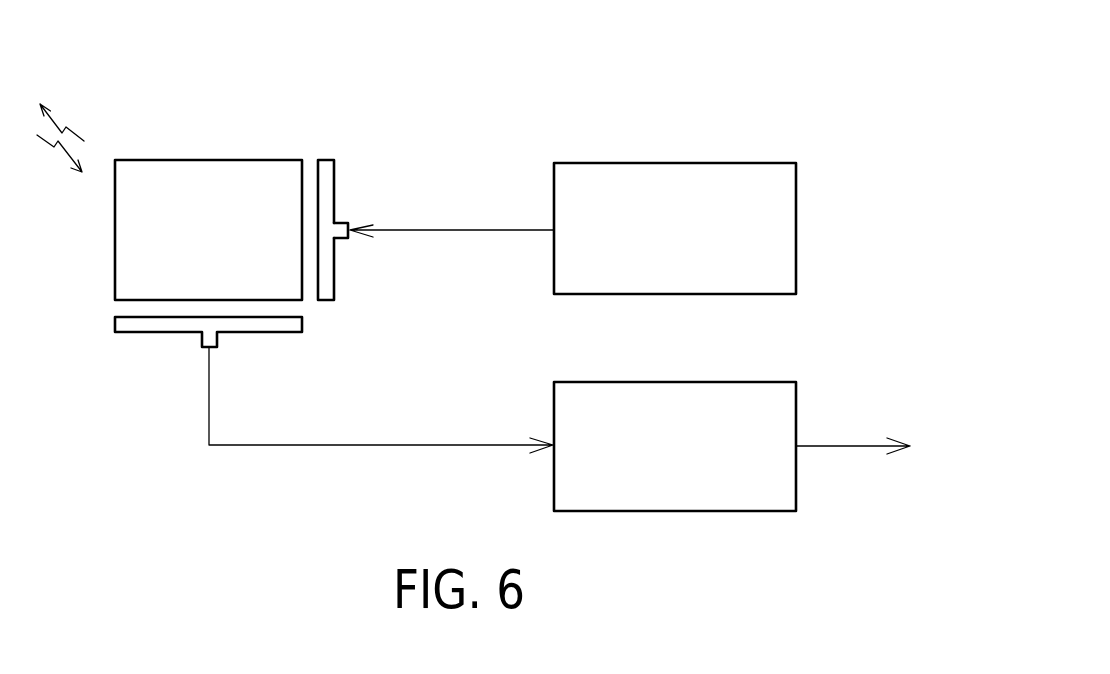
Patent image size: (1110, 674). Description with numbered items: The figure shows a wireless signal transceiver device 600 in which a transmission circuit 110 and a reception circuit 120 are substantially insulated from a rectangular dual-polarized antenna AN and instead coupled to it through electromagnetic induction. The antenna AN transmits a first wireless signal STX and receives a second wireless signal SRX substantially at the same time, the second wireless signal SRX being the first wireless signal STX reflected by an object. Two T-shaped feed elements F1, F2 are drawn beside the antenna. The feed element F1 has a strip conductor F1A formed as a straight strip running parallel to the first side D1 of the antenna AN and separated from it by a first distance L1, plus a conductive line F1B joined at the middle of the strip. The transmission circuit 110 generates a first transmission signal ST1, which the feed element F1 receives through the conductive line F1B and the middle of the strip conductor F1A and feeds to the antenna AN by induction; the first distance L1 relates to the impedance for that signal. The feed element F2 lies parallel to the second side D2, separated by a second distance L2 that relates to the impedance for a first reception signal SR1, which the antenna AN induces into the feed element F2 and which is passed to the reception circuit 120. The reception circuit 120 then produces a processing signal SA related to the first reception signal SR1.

The wireless signal transceiver device 600 is at (722, 62).
The transmission circuit 110 is at (694, 242).
The reception circuit 120 is at (694, 459).
The dual-polarized antenna AN is at (208, 230).
The feed element F1 is at (443, 244).
The strip conductor F1A is at (327, 285).
The conductive line F1B is at (345, 234).
The feed element F2 is at (150, 325).
The first transmission signal ST1 is at (452, 215).
The first reception signal SR1 is at (381, 400).
The processing signal SA is at (853, 430).
The first wireless signal STX is at (79, 113).
The second wireless signal SRX is at (48, 168).
The first side D1 is at (302, 190).
The second side D2 is at (147, 300).
The first distance L1 is at (265, 146).
The second distance L2 is at (101, 265).